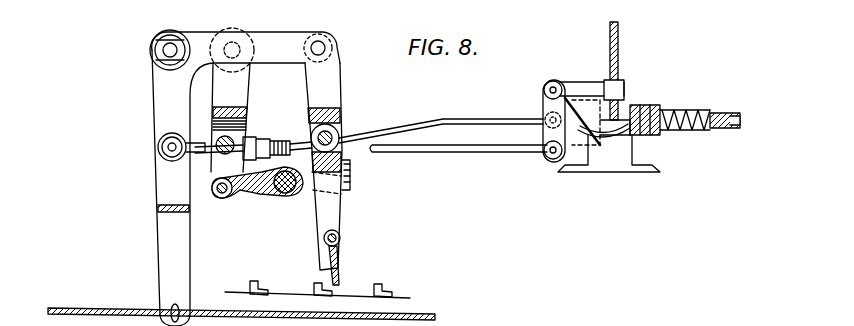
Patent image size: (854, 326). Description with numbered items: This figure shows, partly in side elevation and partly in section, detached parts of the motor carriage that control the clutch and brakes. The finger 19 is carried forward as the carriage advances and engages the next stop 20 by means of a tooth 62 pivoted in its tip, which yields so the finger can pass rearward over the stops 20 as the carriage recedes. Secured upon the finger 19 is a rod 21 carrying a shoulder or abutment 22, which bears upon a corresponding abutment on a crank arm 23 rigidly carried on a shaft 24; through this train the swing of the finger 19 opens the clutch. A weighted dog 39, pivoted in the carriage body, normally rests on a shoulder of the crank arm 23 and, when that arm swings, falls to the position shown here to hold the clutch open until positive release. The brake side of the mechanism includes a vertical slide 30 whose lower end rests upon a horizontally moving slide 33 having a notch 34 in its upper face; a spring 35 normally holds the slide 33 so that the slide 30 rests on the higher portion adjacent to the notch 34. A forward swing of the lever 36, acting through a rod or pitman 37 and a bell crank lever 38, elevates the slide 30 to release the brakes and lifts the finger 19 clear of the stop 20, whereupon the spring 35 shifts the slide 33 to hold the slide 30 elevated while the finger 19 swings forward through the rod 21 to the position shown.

The finger 19 is at (330, 210).
The stop 20 is at (256, 287).
The rod 21 is at (293, 135).
The shoulder or abutment 22 is at (264, 137).
The crank arm 23 is at (238, 82).
The shaft 24 is at (236, 53).
The slide 30 is at (619, 42).
The horizontally moving slide 33 is at (622, 116).
The notch 34 is at (640, 118).
The spring 35 is at (700, 110).
The lever 36 is at (158, 108).
The rod or pitman 37 is at (188, 152).
The bell crank lever 38 is at (545, 103).
The dog 39 is at (258, 194).
The tooth 62 is at (338, 263).